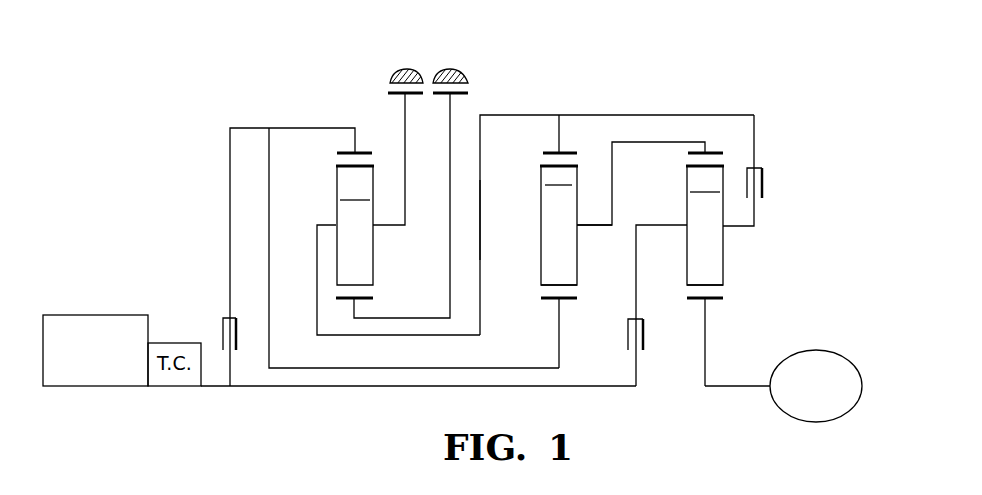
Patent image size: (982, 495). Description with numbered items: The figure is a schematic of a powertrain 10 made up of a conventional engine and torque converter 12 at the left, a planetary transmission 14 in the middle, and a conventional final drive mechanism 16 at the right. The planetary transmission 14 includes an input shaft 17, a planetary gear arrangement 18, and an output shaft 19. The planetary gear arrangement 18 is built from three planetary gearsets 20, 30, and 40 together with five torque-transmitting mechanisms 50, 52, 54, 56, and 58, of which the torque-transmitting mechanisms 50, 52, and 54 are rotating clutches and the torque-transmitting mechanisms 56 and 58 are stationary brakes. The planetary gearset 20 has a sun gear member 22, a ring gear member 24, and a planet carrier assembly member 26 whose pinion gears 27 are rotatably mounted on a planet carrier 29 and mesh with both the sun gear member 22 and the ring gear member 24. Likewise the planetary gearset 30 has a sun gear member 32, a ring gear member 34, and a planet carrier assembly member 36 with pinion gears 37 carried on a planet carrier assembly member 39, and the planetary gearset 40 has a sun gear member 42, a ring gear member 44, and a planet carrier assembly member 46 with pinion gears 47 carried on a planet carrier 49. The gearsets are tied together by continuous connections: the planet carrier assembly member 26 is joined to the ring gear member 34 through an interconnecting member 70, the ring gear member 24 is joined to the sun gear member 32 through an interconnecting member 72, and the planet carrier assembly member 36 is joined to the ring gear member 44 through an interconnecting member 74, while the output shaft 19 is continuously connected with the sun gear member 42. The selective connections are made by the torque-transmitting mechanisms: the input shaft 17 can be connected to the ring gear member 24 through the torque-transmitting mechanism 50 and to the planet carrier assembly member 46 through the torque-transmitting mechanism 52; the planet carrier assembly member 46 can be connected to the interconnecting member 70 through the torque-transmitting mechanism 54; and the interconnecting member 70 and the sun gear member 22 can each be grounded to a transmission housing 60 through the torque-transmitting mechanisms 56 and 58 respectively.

The powertrain 10 is at (196, 171).
The engine and torque converter 12 is at (101, 311).
The planetary transmission 14 is at (469, 48).
The final drive mechanism 16 is at (847, 350).
The input shaft 17 is at (210, 386).
The planetary gear arrangement 18 is at (486, 354).
The output shaft 19 is at (752, 387).
The planetary gearset 20 is at (325, 295).
The sun gear member 22 is at (365, 302).
The ring gear member 24 is at (345, 150).
The planet carrier assembly member 26 is at (335, 170).
The pinion gears 27 is at (343, 200).
The planet carrier 29 is at (385, 226).
The planetary gearset 30 is at (538, 292).
The sun gear member 32 is at (548, 300).
The ring gear member 34 is at (547, 150).
The planet carrier assembly member 36 is at (539, 163).
The pinion gears 37 is at (572, 185).
The planet carrier assembly member 39 is at (593, 227).
The planetary gearset 40 is at (683, 306).
The sun gear member 42 is at (713, 300).
The ring gear member 44 is at (707, 150).
The planet carrier assembly member 46 is at (685, 163).
The pinion gears 47 is at (690, 192).
The planet carrier 49 is at (740, 228).
The torque-transmitting mechanism 50 is at (241, 331).
The torque-transmitting mechanism 52 is at (647, 331).
The torque-transmitting mechanism 54 is at (766, 181).
The torque-transmitting mechanism 56 is at (386, 93).
The torque-transmitting mechanism 58 is at (470, 94).
The transmission housing 60 is at (445, 68).
The interconnecting member 70 is at (481, 222).
The interconnecting member 72 is at (414, 369).
The interconnecting member 74 is at (614, 183).